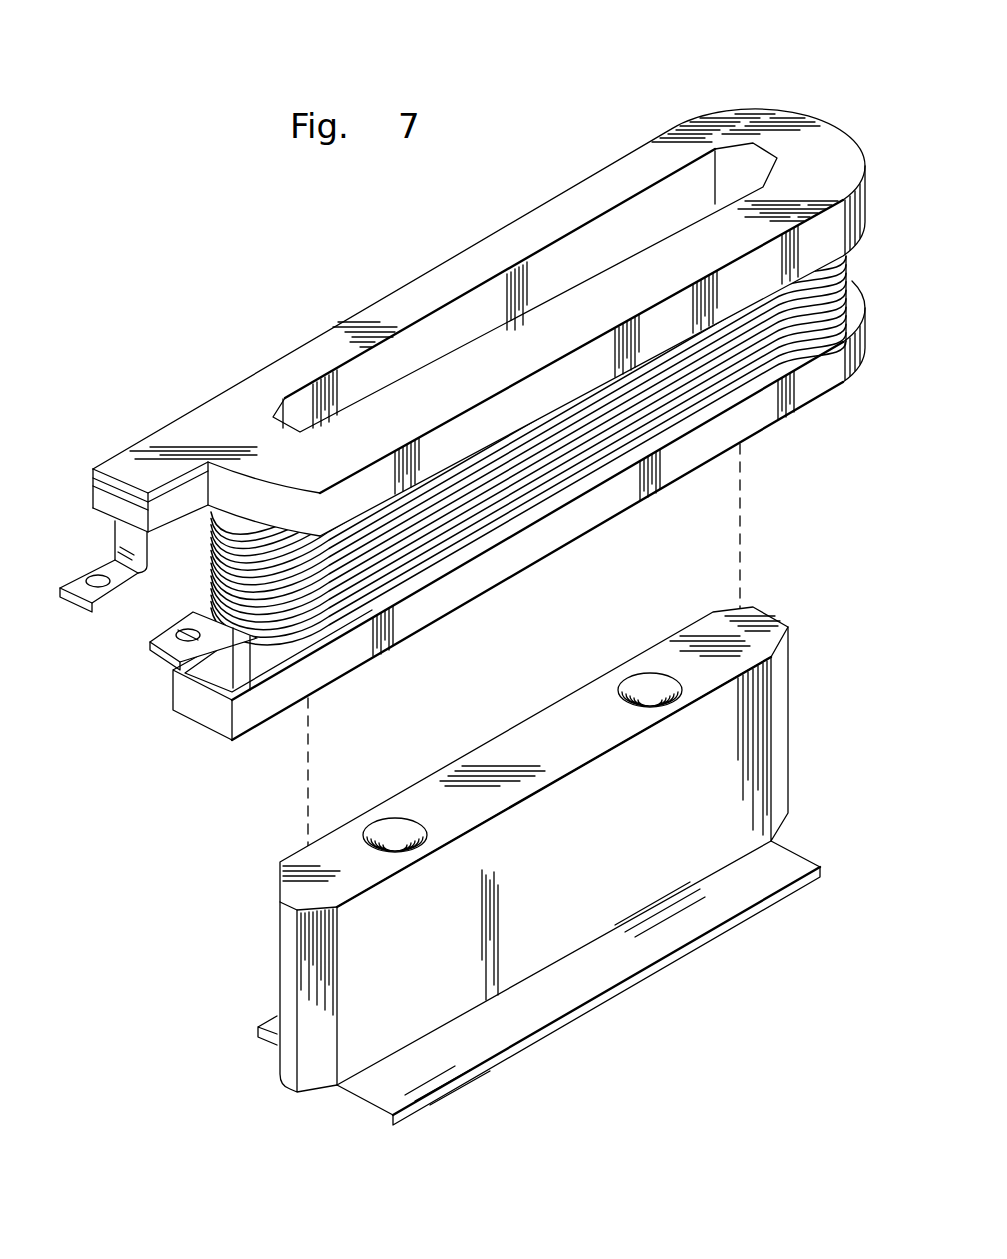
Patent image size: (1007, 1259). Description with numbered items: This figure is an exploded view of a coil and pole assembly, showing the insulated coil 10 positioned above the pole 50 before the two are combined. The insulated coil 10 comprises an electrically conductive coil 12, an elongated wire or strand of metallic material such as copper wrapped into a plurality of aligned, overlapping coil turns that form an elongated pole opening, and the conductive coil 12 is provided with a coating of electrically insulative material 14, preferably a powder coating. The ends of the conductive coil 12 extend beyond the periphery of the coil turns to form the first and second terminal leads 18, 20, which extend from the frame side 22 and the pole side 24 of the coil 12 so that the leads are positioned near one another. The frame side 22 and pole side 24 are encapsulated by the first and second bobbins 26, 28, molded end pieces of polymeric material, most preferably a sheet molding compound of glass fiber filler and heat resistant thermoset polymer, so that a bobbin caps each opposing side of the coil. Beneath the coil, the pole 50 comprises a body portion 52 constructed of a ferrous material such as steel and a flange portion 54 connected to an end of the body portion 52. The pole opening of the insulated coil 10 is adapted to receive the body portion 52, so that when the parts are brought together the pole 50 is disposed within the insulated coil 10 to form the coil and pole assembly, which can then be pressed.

The insulated coil 10 is at (745, 88).
The electrically conductive coil 12 is at (858, 280).
The coating of electrically insulative material 14 is at (847, 242).
The first terminal lead 18 is at (63, 590).
The second terminal lead 20 is at (155, 651).
The frame side 22 is at (398, 260).
The pole side 24 is at (661, 524).
The first bobbin 26 is at (218, 409).
The second bobbin 28 is at (484, 590).
The pole 50 is at (812, 741).
The body portion 52 is at (780, 790).
The flange portion 54 is at (778, 892).